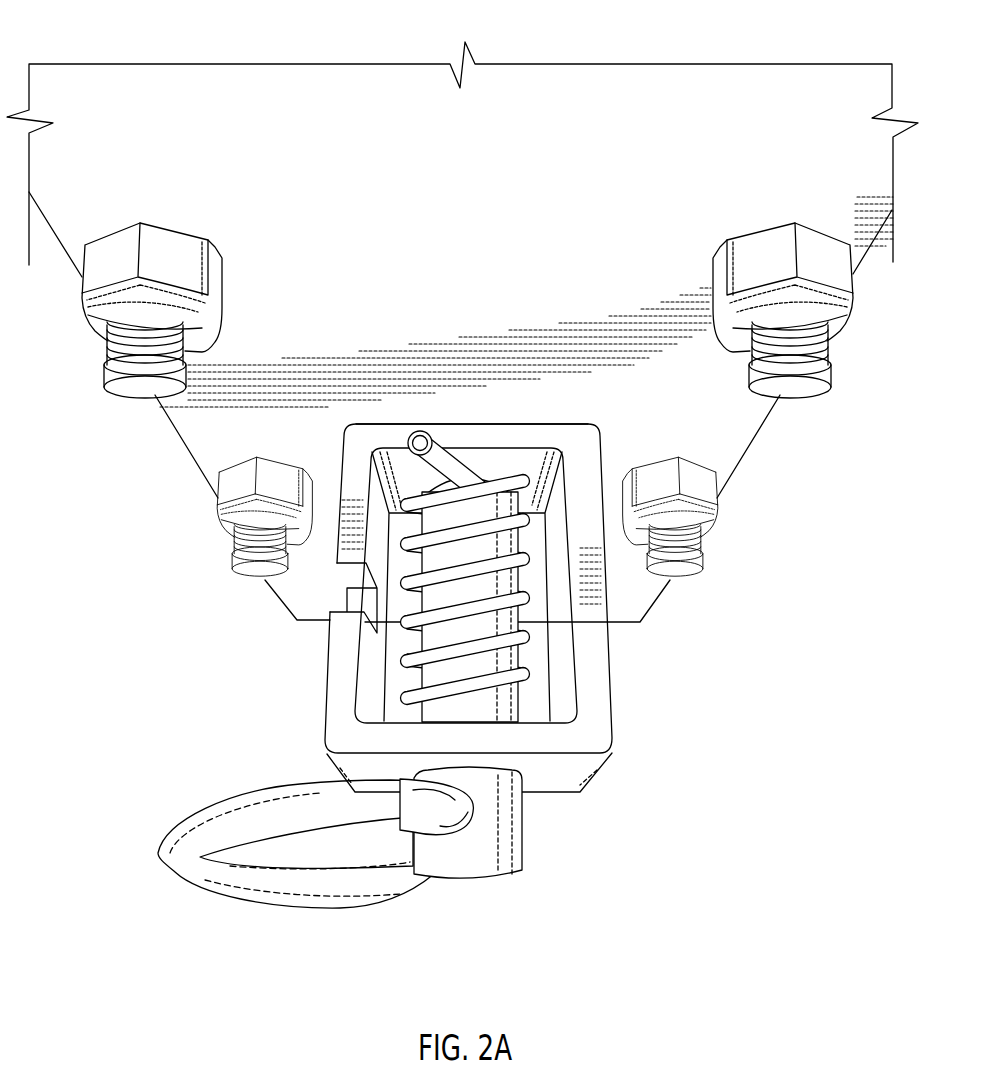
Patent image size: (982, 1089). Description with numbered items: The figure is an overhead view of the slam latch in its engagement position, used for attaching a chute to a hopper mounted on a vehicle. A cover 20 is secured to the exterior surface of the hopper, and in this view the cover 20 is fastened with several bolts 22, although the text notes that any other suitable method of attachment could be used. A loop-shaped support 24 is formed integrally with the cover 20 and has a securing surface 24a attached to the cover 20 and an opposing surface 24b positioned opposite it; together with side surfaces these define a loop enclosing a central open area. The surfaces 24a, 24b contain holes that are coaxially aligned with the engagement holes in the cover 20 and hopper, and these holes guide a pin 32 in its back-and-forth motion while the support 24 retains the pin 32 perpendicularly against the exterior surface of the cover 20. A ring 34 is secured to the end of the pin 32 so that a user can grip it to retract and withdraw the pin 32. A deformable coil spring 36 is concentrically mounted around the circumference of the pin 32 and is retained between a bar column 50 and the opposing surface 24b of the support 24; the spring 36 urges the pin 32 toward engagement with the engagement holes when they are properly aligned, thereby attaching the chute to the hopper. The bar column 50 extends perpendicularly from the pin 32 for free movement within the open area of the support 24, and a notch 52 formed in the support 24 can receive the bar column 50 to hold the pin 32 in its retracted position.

The cover 20 is at (103, 93).
The bolts 22 is at (217, 498).
The support 24 is at (330, 708).
The securing surface 24a is at (581, 437).
The opposing surface 24b is at (563, 775).
The pin 32 is at (483, 860).
The ring 34 is at (295, 900).
The deformable coil spring 36 is at (507, 513).
The bar column 50 is at (418, 431).
The notch 52 is at (350, 598).